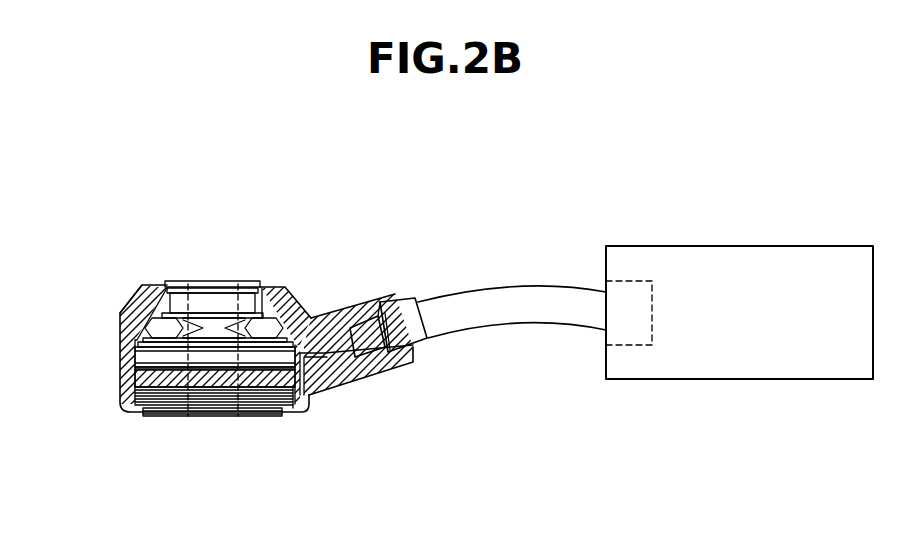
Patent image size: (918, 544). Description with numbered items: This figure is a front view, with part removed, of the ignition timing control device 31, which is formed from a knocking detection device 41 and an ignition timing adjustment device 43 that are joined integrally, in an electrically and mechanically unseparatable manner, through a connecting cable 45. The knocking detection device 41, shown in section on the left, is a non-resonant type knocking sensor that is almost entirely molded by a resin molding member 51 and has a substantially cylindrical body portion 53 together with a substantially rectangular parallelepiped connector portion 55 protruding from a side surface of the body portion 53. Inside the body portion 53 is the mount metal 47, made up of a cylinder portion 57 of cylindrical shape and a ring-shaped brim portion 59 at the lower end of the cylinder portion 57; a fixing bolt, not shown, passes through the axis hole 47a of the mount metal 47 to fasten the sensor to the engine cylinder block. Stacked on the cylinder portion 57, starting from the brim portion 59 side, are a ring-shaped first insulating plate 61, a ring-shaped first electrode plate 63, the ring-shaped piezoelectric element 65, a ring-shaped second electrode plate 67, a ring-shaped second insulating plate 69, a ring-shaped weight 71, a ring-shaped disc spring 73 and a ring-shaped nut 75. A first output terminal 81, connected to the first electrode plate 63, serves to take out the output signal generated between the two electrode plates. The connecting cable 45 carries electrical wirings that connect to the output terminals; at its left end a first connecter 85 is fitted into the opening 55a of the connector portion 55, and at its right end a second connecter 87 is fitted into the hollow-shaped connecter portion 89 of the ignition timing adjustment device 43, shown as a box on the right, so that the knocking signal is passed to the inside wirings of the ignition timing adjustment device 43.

The ignition timing control device 31 is at (565, 182).
The knocking detection device 41 is at (315, 190).
The ignition timing adjustment device 43 is at (747, 193).
The connecting cable 45 is at (510, 268).
The mount metal 47 is at (175, 417).
The axis hole 47a is at (229, 303).
The resin molding member 51 is at (311, 318).
The body portion 53 is at (137, 260).
The connector portion 55 is at (393, 384).
The opening 55a is at (397, 313).
The cylinder portion 57 is at (183, 283).
The brim portion 59 is at (262, 408).
The first insulating plate 61 is at (158, 390).
The first electrode plate 63 is at (153, 389).
The piezoelectric element 65 is at (140, 394).
The second electrode plate 67 is at (147, 381).
The second insulating plate 69 is at (145, 370).
The weight 71 is at (142, 356).
The disc spring 73 is at (150, 330).
The nut 75 is at (140, 296).
The first output terminal 81 is at (335, 355).
The first connecter 85 is at (412, 333).
The second connecter 87 is at (628, 333).
The connecter portion 89 is at (627, 290).